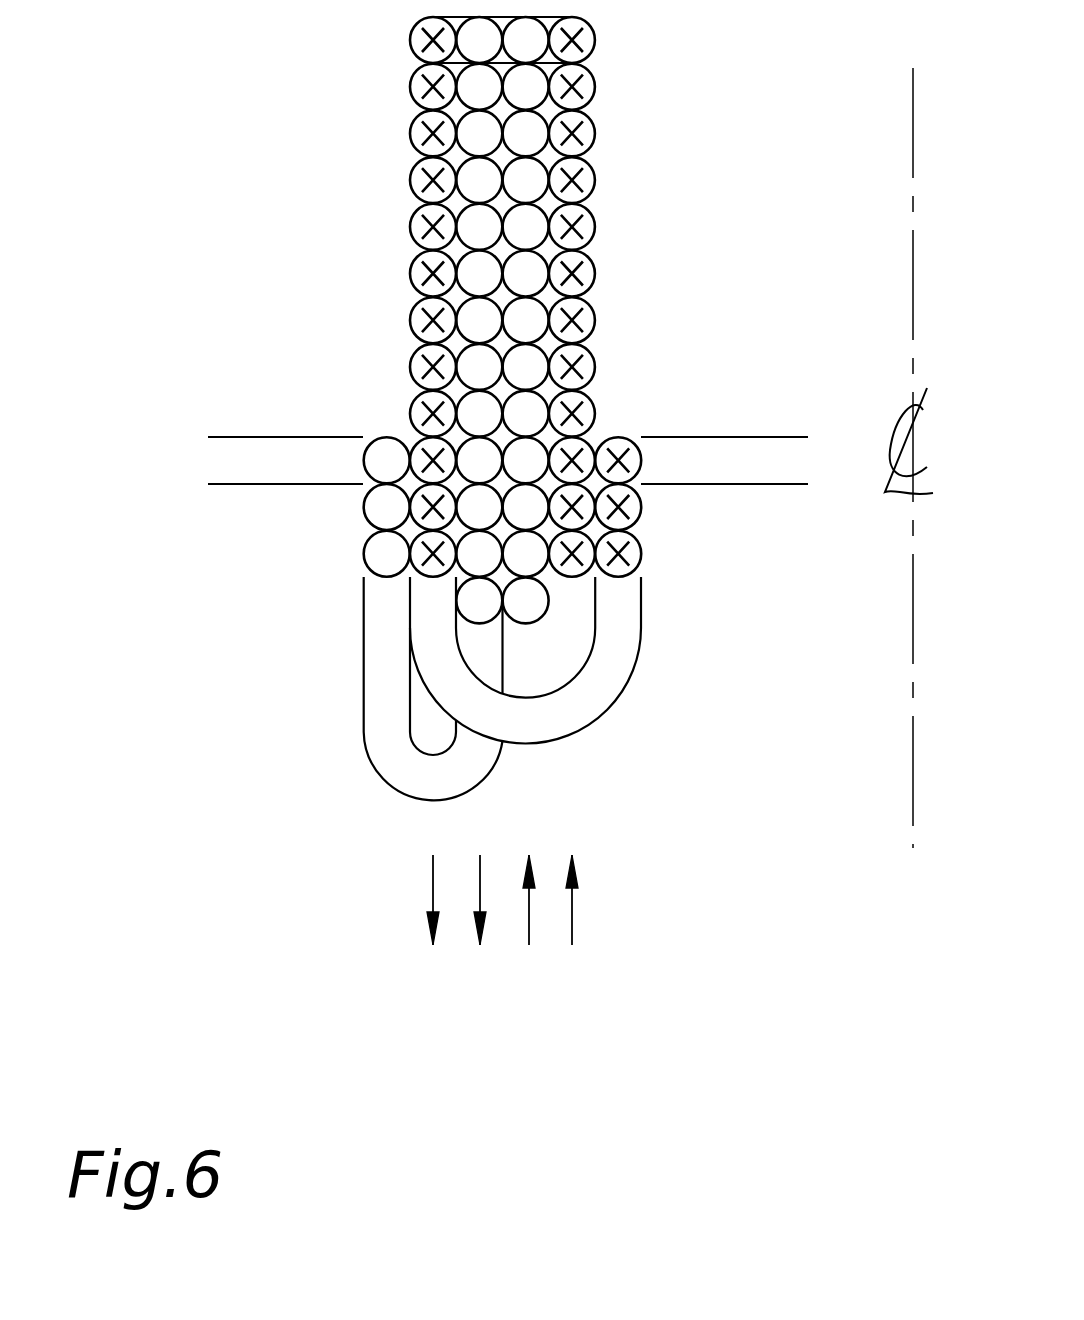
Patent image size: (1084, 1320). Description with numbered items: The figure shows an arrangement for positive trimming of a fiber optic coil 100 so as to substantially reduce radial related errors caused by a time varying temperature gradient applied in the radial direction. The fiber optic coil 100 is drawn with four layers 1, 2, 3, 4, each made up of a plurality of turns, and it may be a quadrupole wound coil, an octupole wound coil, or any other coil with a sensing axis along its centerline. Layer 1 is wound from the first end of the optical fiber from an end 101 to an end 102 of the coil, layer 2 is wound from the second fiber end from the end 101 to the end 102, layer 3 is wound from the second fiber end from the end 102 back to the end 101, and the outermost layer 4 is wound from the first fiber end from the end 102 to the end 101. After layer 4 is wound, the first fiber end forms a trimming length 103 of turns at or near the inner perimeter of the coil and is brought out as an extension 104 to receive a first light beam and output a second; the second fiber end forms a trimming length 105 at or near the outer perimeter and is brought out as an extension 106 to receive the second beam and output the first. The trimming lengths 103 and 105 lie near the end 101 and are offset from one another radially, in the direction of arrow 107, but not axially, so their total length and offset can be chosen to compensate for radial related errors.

The fiber optic coil 100 is at (355, 160).
The end 101 is at (697, 874).
The end 102 is at (697, 81).
The trimming length 103 is at (657, 527).
The extension 104 is at (712, 438).
The trimming length 105 is at (347, 525).
The extension 106 is at (283, 438).
The arrow 107 is at (913, 225).
The layer 1 is at (572, 874).
The layer 2 is at (531, 874).
The layer 3 is at (480, 874).
The layer 4 is at (433, 874).